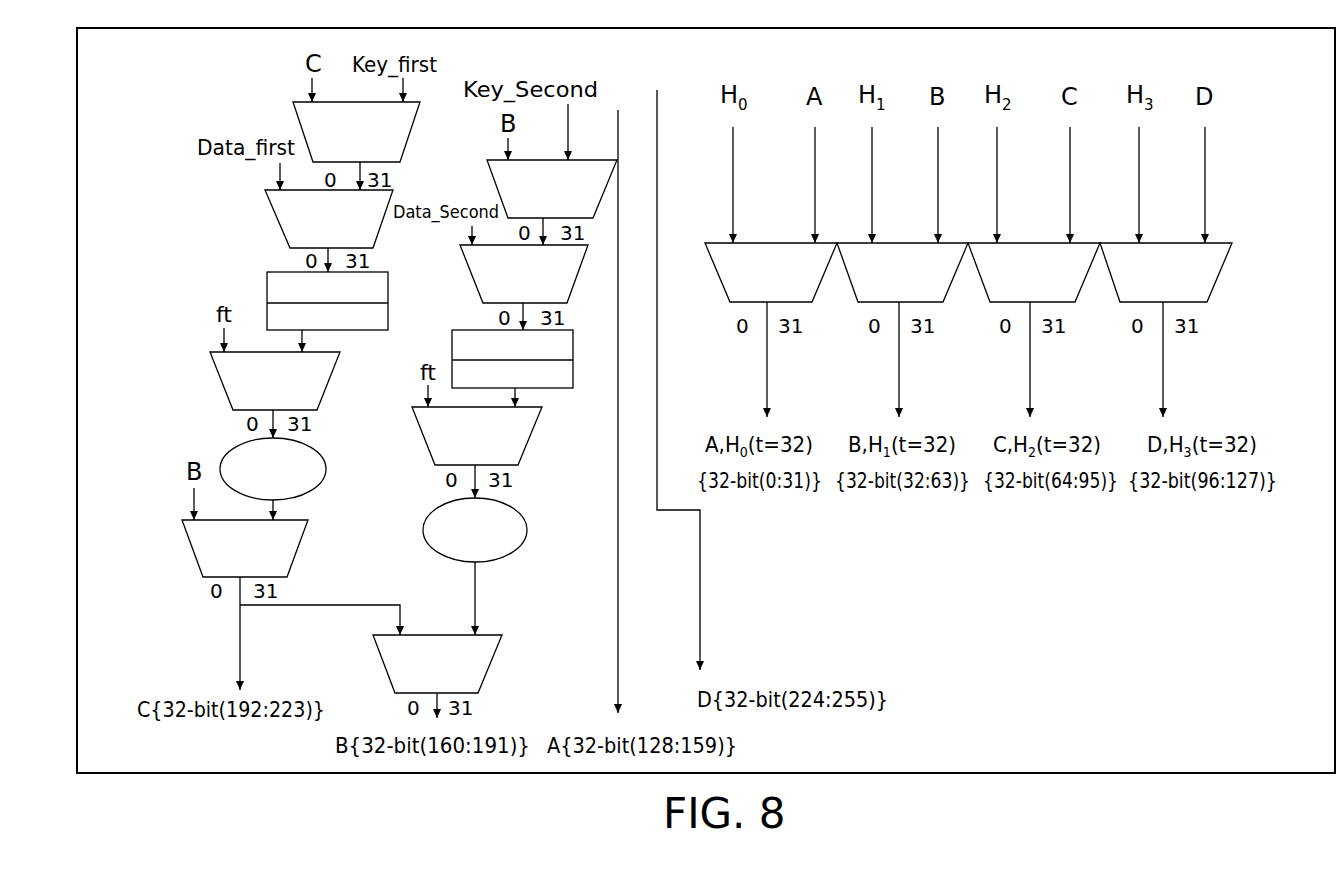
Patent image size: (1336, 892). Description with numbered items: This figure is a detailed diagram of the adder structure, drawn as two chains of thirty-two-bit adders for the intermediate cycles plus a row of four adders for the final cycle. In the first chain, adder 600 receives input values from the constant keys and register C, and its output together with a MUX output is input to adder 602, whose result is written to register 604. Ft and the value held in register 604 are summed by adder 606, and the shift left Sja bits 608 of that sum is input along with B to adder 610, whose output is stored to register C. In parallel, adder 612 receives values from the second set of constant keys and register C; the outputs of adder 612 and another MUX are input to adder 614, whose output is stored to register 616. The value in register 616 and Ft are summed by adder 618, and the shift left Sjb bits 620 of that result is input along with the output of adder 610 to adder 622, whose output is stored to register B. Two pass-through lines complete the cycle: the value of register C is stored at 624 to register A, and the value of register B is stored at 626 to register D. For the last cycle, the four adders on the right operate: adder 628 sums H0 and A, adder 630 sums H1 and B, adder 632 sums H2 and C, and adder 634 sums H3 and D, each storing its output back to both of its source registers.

The adder 600 is at (293, 112).
The adder 602 is at (271, 207).
The register 604 is at (267, 281).
The adder 606 is at (217, 378).
The shift left Sja bits 608 is at (317, 478).
The adder 610 is at (198, 563).
The adder 612 is at (490, 174).
The adder 614 is at (467, 260).
The register 616 is at (574, 376).
The adder 618 is at (523, 455).
The shift left Sjb bits 620 is at (505, 557).
The adder 622 is at (496, 657).
The store path 624 is at (618, 597).
The store path 626 is at (701, 553).
The adder 628 is at (755, 243).
The adder 630 is at (888, 243).
The adder 632 is at (1010, 243).
The adder 634 is at (1152, 243).